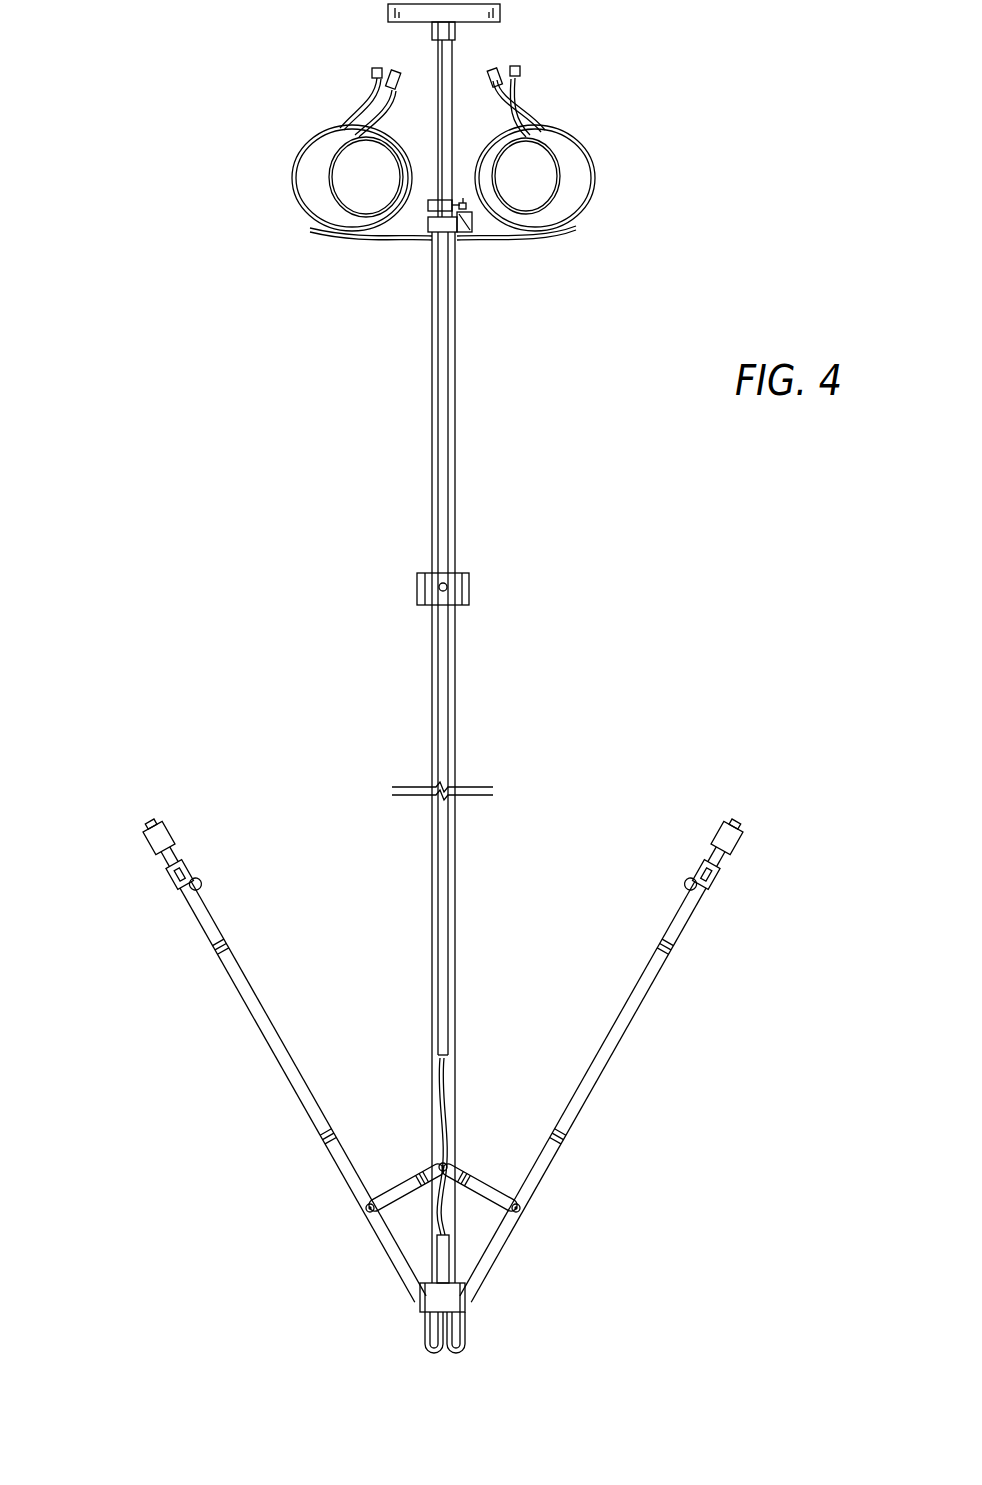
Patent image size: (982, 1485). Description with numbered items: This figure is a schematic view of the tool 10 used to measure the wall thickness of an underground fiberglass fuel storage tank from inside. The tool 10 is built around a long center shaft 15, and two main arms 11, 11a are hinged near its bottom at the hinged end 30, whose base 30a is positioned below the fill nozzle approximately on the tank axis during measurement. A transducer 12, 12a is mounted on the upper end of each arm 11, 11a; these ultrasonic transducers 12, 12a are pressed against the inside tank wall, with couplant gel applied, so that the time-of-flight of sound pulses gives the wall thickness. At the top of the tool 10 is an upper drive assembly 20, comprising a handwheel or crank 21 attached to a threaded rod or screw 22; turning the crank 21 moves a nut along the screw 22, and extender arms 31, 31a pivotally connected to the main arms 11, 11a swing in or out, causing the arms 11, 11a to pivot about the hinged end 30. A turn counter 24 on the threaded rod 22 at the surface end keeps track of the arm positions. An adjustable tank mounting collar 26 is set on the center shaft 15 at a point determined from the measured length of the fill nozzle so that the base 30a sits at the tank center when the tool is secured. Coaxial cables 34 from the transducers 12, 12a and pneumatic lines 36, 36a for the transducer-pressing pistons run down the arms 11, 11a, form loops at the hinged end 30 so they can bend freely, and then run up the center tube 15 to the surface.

The tool 10 is at (185, 387).
The arm 11 is at (255, 1025).
The arm 11a is at (628, 1026).
The transducer 12 is at (147, 832).
The transducer 12a is at (735, 826).
The center shaft 15 is at (455, 463).
The upper assembly 20 is at (618, 98).
The handwheel 21 is at (388, 13).
The threaded rod 22 is at (438, 108).
The turn counter 24 is at (465, 233).
The adjustable tank mounting collar 26 is at (470, 590).
The hinged end 30 is at (698, 1205).
The base 30a is at (470, 1313).
The extender arm 31 is at (400, 1184).
The extender arm 31a is at (487, 1183).
The coaxial cable 34 is at (347, 213).
The pneumatic line 36 is at (295, 205).
The pneumatic line 36a is at (598, 165).